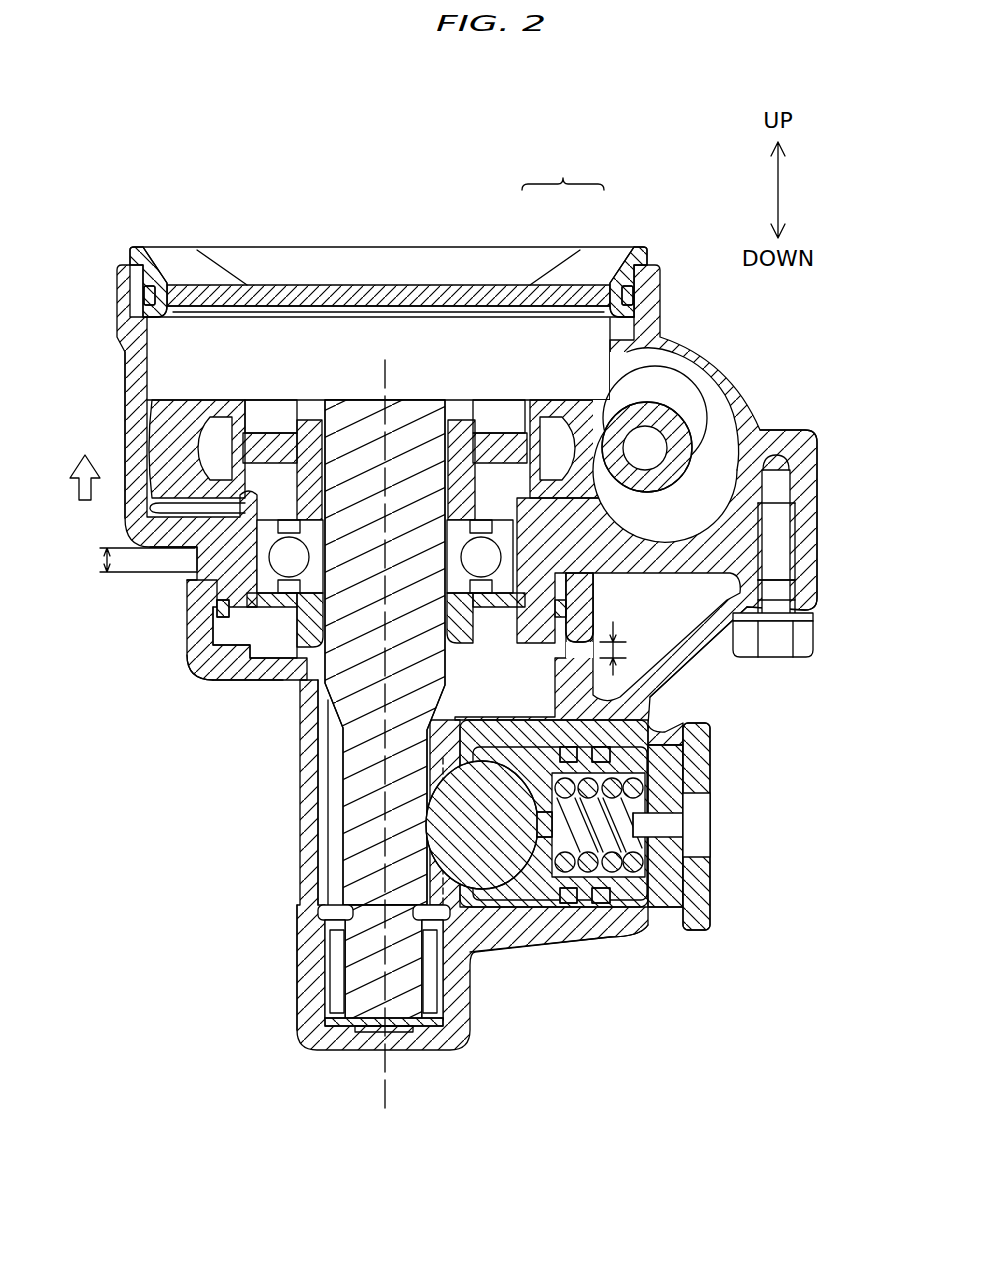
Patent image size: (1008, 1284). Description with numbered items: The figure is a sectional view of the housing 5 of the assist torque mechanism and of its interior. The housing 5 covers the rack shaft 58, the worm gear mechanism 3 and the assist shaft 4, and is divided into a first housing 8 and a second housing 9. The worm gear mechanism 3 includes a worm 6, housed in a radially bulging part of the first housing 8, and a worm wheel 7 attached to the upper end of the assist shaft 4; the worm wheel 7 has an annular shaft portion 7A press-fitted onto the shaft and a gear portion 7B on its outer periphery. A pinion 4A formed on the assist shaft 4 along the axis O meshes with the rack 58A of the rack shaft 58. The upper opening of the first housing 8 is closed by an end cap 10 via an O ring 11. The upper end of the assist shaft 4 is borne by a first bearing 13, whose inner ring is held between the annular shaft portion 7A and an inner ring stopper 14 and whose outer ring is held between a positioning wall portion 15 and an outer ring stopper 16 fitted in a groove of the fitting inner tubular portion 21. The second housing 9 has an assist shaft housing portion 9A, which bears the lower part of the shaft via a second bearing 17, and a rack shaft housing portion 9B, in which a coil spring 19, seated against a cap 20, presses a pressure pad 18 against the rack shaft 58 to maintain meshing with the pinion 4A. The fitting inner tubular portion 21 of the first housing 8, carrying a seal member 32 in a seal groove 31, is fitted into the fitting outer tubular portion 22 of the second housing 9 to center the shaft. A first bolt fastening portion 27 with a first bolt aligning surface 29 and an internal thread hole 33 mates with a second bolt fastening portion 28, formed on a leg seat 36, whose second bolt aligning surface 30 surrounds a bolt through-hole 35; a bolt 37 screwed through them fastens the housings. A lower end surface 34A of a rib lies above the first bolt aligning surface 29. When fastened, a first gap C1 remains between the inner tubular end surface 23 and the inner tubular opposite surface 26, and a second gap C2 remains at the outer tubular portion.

The worm gear mechanism 3 is at (705, 438).
The assist shaft 4 is at (433, 398).
The pinion 4A is at (336, 795).
The housing 5 is at (114, 358).
The worm 6 is at (680, 372).
The worm wheel 7 is at (563, 173).
The annular shaft portion 7A is at (497, 432).
The gear portion 7B is at (583, 398).
The first housing 8 is at (127, 410).
The second housing 9 is at (303, 856).
The assist shaft housing portion 9A is at (300, 944).
The rack shaft housing portion 9B is at (580, 940).
The end cap 10 is at (275, 292).
The O ring 11 is at (176, 290).
The first bearing 13 is at (596, 600).
The inner ring stopper 14 is at (290, 660).
The positioning wall portion 15 is at (188, 541).
The outer ring stopper 16 is at (258, 618).
The second bearing 17 is at (337, 983).
The pressure pad 18 is at (630, 890).
The coil spring 19 is at (640, 865).
The cap 20 is at (708, 745).
The fitting inner tubular portion 21 is at (257, 615).
The fitting outer tubular portion 22 is at (190, 588).
The inner tubular end surface 23 is at (228, 652).
The inner tubular opposite surface 26 is at (215, 682).
The first bolt fastening portion 27 is at (810, 530).
The second bolt fastening portion 28 is at (800, 603).
The first bolt aligning surface 29 is at (812, 585).
The second bolt aligning surface 30 is at (805, 560).
The seal groove 31 is at (200, 655).
The seal member 32 is at (217, 607).
The internal thread hole 33 is at (792, 500).
The lower end surface 34A is at (660, 576).
The bolt through-hole 35 is at (800, 635).
The leg seat 36 is at (688, 676).
The bolt 37 is at (775, 652).
The rack shaft 58 is at (510, 853).
The rack 58A is at (433, 870).
The first gap C1 is at (626, 648).
The second gap C2 is at (128, 569).
The axis O is at (384, 755).